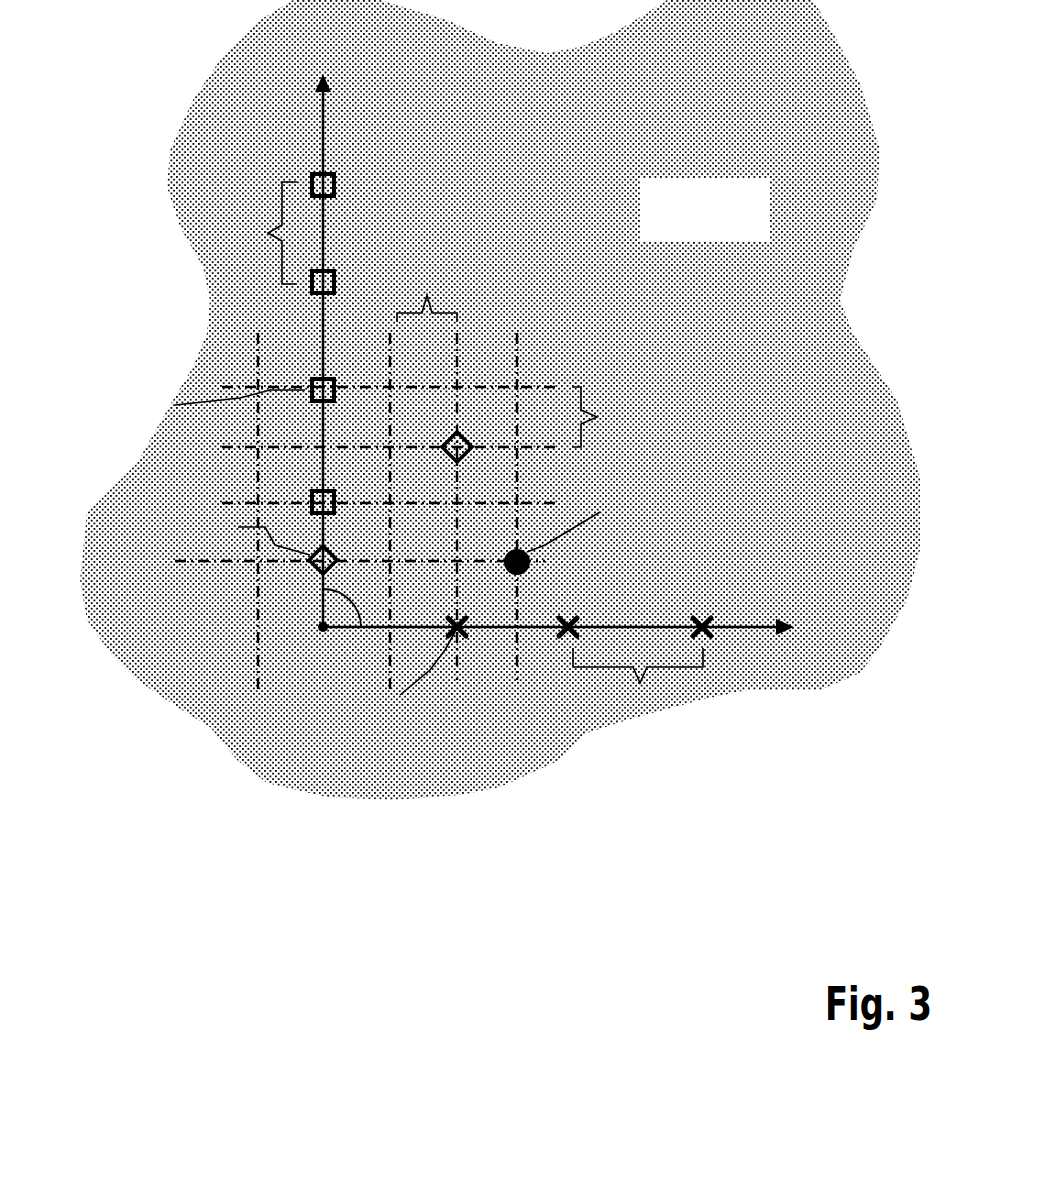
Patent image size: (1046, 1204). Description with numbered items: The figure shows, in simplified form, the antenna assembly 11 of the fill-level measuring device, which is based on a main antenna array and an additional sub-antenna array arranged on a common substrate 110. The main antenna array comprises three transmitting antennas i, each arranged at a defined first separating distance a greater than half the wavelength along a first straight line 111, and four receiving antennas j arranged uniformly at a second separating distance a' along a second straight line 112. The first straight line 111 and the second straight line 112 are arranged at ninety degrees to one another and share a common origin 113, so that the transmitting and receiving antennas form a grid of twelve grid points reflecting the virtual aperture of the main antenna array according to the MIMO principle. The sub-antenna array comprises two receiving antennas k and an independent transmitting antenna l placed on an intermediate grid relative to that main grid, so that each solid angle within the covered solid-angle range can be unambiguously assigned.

The antenna assembly 11 is at (494, 474).
The substrate 110 is at (729, 228).
The first straight line 111 is at (740, 628).
The second straight line 112 is at (323, 125).
The origin 113 is at (322, 631).